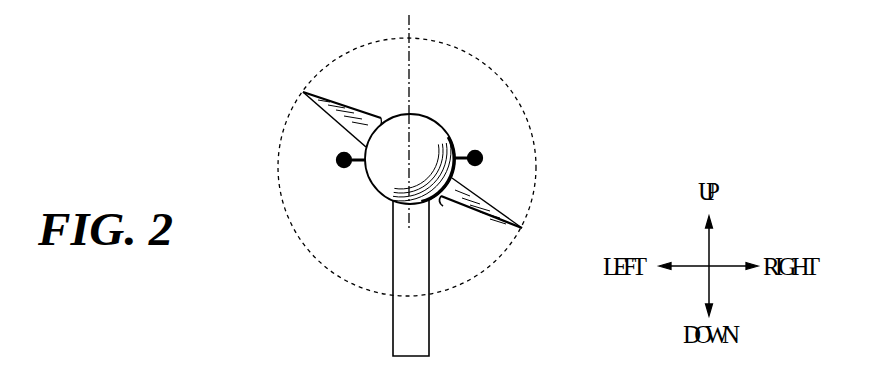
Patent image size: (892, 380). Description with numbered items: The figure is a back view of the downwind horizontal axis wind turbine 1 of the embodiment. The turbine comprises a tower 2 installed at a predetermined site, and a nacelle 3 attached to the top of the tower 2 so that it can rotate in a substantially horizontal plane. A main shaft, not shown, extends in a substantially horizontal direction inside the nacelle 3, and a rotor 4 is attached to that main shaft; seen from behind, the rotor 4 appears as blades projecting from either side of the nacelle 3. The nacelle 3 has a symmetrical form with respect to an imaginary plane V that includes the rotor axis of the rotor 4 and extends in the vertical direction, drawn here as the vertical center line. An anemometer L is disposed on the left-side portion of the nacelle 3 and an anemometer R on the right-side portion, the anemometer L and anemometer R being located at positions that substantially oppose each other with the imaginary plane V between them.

The horizontal axis wind turbine 1 is at (326, 296).
The tower 2 is at (418, 322).
The nacelle 3 is at (420, 128).
The rotor 4 is at (322, 106).
The anemometer L is at (337, 165).
The anemometer R is at (483, 161).
The imaginary plane V is at (409, 68).